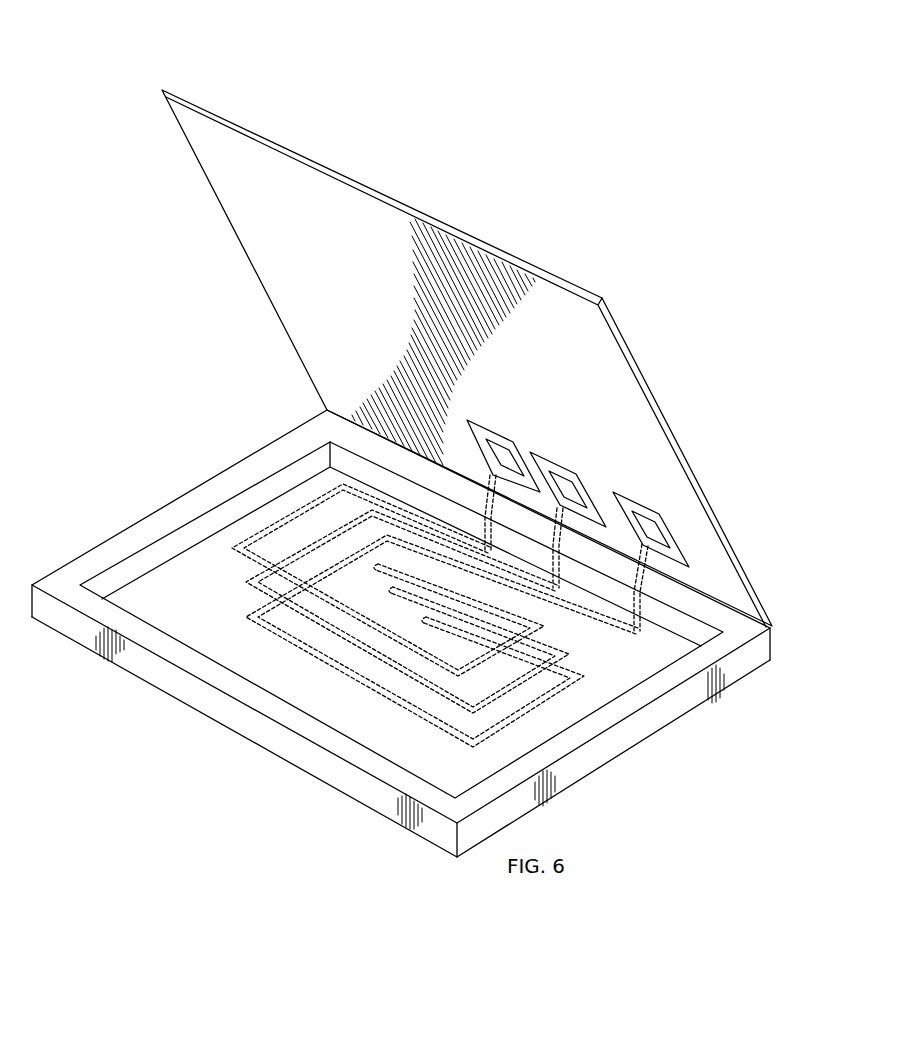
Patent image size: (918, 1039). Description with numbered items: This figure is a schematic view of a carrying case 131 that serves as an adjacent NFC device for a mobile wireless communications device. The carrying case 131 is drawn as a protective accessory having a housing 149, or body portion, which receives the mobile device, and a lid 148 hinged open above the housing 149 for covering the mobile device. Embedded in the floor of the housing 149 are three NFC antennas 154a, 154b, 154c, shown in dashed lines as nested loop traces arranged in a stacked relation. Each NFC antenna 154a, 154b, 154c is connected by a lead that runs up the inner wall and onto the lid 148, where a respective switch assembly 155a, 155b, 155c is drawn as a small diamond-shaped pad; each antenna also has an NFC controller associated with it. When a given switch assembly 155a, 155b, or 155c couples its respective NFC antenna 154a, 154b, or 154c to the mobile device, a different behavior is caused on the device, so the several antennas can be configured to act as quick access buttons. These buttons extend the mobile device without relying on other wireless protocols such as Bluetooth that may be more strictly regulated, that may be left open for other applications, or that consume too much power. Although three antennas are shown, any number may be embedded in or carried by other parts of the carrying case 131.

The lid 148 is at (203, 175).
The carrying case 131 is at (103, 540).
The housing 149 is at (658, 730).
The NFC antenna 154a is at (313, 500).
The NFC antenna 154b is at (303, 553).
The NFC antenna 154c is at (260, 610).
The switch assembly 155a is at (513, 442).
The switch assembly 155b is at (577, 473).
The switch assembly 155c is at (661, 513).